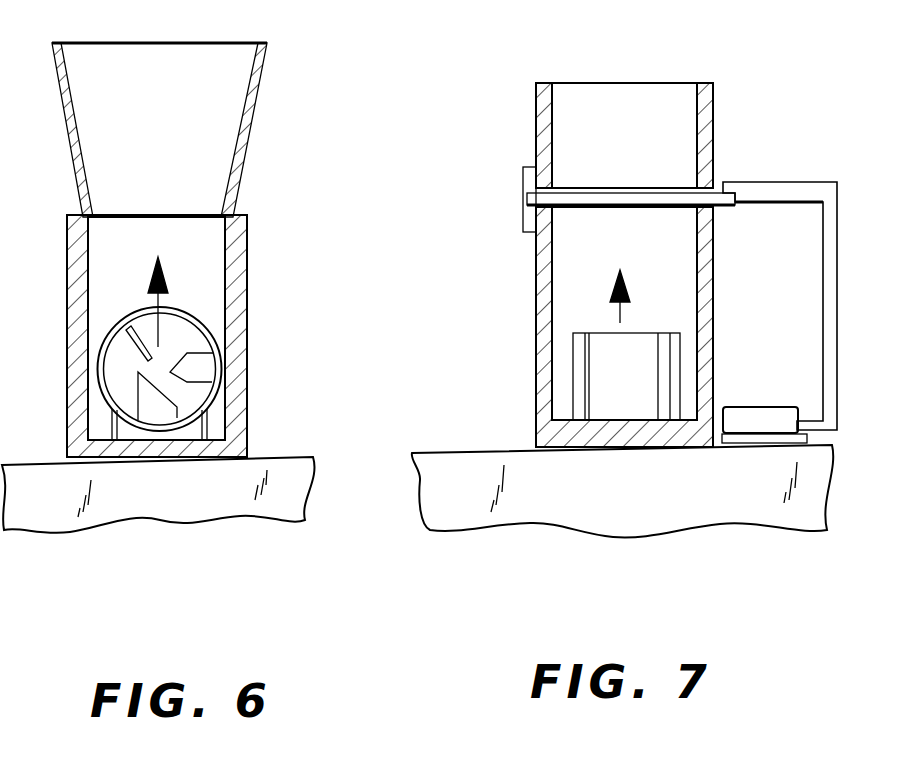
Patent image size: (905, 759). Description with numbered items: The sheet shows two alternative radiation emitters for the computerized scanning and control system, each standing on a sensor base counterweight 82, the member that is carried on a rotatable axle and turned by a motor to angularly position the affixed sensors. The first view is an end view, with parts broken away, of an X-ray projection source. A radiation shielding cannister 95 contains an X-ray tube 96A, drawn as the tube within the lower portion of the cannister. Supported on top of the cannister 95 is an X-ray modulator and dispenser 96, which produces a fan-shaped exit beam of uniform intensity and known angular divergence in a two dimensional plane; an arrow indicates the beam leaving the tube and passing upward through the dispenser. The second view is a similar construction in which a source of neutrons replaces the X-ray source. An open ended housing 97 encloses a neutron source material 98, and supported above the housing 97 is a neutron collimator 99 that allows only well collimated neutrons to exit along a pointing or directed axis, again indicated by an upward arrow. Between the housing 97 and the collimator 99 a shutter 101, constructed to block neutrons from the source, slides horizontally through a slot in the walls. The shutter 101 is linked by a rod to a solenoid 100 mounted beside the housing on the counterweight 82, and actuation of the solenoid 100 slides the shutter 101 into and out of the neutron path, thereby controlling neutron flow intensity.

In FIG. 6, the sensor base counterweight 82 is at (77, 533).
In FIG. 7, the sensor base counterweight 82 is at (433, 533).
In FIG. 6, the radiation shielding cannister 95 is at (249, 278).
In FIG. 6, the X-ray modulator and dispenser 96 is at (268, 44).
In FIG. 6, the X-ray tube 96A is at (213, 366).
In FIG. 7, the open ended housing 97 is at (537, 318).
In FIG. 7, the neutron source material 98 is at (598, 390).
In FIG. 7, the neutron collimator 99 is at (713, 138).
In FIG. 7, the solenoid 100 is at (747, 404).
In FIG. 7, the shutter 101 is at (717, 207).